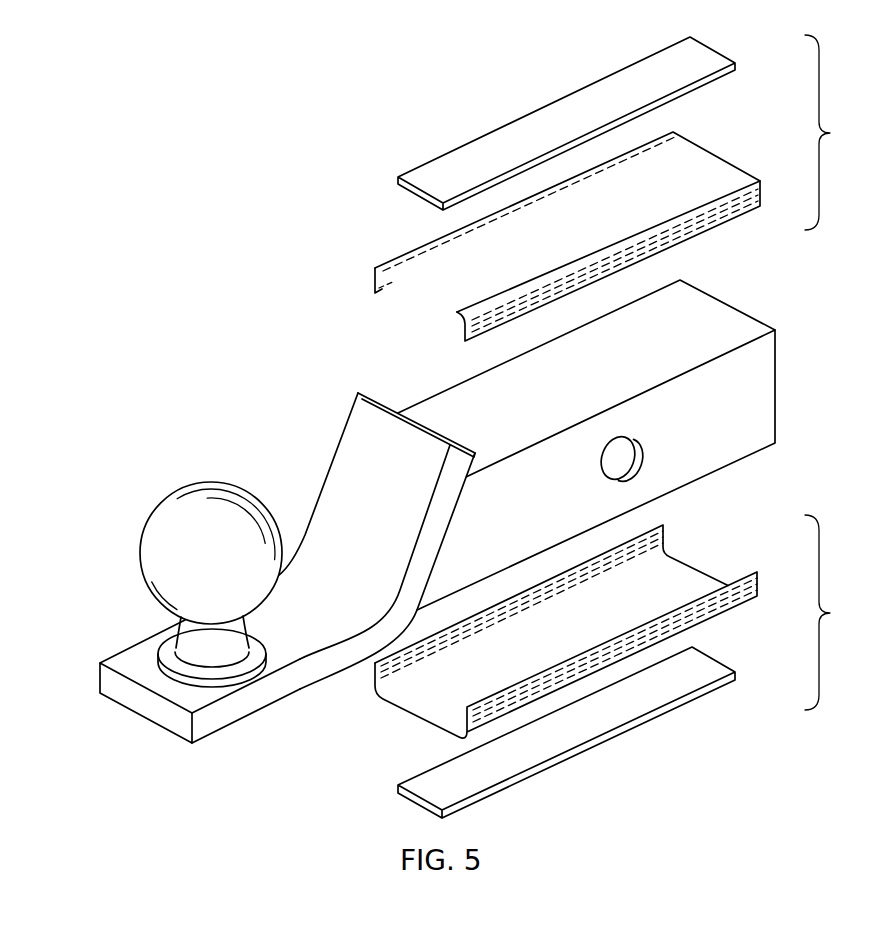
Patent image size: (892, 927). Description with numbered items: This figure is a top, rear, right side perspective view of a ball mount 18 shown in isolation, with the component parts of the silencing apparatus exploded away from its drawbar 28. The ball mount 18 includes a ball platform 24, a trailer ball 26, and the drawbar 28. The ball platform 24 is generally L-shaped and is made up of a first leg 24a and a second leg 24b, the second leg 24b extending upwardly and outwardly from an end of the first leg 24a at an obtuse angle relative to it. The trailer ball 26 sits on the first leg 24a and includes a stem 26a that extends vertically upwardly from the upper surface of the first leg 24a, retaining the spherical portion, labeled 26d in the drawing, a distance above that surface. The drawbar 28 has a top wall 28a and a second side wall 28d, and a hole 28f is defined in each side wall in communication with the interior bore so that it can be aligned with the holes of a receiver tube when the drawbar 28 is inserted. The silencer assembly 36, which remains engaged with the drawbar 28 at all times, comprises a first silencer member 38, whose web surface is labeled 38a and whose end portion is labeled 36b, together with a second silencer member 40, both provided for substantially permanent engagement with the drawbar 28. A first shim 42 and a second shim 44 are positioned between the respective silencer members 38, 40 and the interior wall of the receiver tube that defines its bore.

The ball mount 18 is at (246, 603).
The ball platform 24 is at (287, 603).
The first leg 24a is at (282, 703).
The second leg 24b is at (368, 467).
The trailer ball 26 is at (150, 568).
The stem 26a is at (170, 638).
The spherical ball portion 26d is at (235, 569).
The drawbar 28 is at (630, 445).
The top wall 28a is at (580, 399).
The second side wall 28d is at (596, 470).
The hole 28f is at (636, 474).
The silencer assembly 36 is at (835, 372).
The sleeve flange 36b is at (408, 302).
The first silencer member 38 is at (540, 250).
The web of upper channel member 38a is at (595, 233).
The second silencer member 40 is at (738, 617).
The first shim 42 is at (432, 153).
The second shim 44 is at (608, 760).